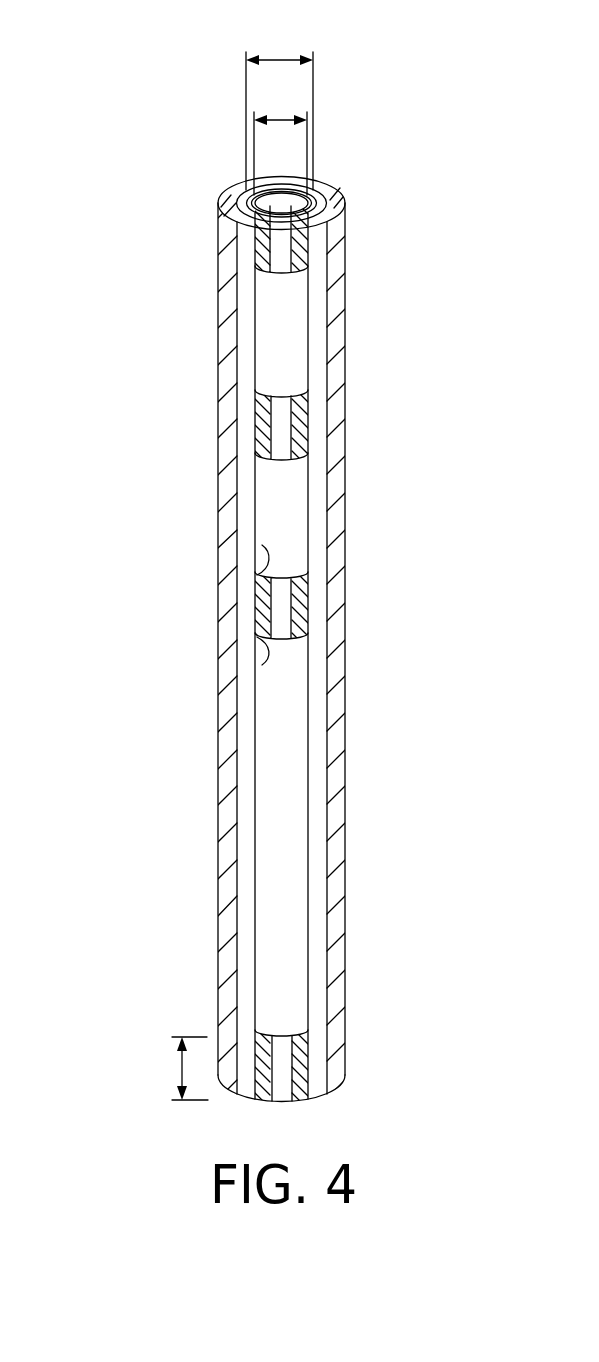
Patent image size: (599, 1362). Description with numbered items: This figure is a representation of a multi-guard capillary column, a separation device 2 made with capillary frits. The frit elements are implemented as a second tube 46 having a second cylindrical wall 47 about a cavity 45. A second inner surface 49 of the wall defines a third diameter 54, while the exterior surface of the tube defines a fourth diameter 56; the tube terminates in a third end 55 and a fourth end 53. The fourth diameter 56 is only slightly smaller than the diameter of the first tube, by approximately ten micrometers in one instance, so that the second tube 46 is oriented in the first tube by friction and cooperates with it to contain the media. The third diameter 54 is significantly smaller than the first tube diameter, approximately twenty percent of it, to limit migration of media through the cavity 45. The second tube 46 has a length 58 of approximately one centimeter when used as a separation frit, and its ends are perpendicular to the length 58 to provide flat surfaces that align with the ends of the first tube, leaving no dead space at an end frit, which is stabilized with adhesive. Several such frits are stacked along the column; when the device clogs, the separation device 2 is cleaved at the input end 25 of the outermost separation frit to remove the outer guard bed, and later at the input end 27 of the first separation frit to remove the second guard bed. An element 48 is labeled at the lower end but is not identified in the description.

The separation device 2 is at (96, 138).
The input end of the separation frit 25 is at (358, 393).
The input end of the first separation frit 27 is at (358, 574).
The cavity 45 is at (278, 199).
The second tube 46 is at (279, 249).
The second cylindrical wall 47 is at (240, 188).
The end plug 48 is at (309, 1068).
The second inner surface 49 is at (297, 210).
The fourth end 53 is at (262, 545).
The third diameter 54 is at (290, 120).
The third end 55 is at (262, 665).
The fourth diameter 56 is at (280, 60).
The length 58 is at (180, 1066).